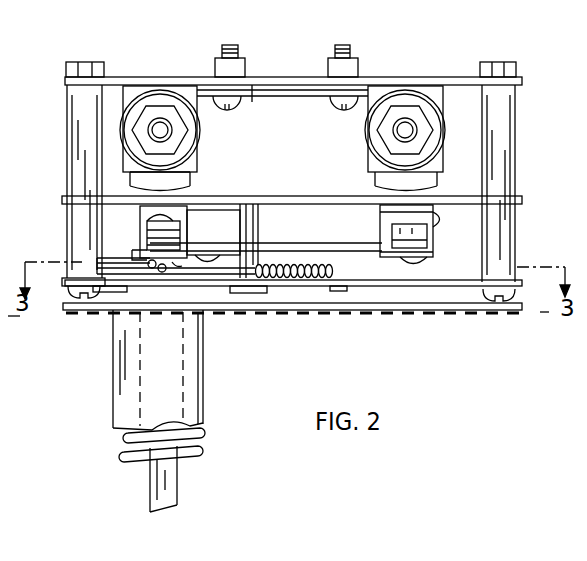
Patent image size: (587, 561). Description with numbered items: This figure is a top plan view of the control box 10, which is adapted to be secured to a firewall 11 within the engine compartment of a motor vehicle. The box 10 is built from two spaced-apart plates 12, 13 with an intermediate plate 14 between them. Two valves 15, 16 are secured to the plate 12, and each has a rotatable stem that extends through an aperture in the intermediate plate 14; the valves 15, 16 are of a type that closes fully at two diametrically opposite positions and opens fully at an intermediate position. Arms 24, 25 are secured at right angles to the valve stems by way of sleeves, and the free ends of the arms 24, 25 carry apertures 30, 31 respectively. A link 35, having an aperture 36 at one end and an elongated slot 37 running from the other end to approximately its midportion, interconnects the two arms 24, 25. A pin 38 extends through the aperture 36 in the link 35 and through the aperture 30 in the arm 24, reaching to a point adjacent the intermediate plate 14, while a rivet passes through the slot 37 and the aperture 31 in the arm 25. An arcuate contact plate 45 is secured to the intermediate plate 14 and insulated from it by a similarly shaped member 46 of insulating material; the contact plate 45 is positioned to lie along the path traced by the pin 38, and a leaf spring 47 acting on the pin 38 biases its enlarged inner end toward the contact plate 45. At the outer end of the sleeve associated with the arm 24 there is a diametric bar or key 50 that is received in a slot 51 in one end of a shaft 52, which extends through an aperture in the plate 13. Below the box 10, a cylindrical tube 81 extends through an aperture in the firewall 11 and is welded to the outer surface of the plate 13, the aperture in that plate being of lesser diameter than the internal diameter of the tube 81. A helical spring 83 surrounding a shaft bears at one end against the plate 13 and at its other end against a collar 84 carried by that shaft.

The control box 10 is at (149, 64).
The firewall 11 is at (50, 312).
The plate 12 is at (452, 88).
The plate 13 is at (472, 284).
The intermediate plate 14 is at (447, 202).
The valve 15 is at (165, 96).
The valve 16 is at (406, 93).
The arm 24 is at (165, 248).
The arm 25 is at (381, 232).
The aperture 30 is at (134, 222).
The aperture 31 is at (415, 240).
The link 35 is at (382, 256).
The aperture 36 is at (187, 233).
The elongated slot 37 is at (284, 244).
The pin 38 is at (132, 260).
The arcuate contact plate 45 is at (243, 212).
The member of insulating material 46 is at (227, 204).
The leaf spring 47 is at (237, 250).
The diametric bar or key 50 is at (162, 270).
The slot 51 is at (150, 266).
The shaft 52 is at (178, 267).
The cylindrical tube 81 is at (203, 366).
The helical spring 83 is at (200, 438).
The collar 84 is at (207, 451).